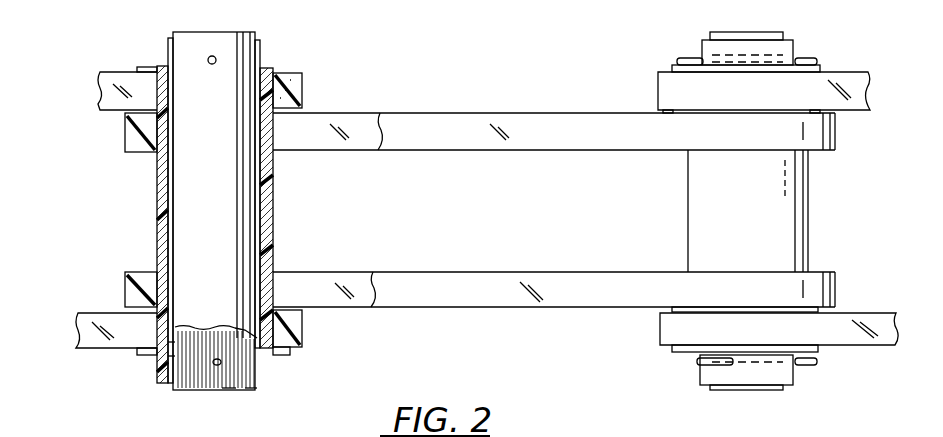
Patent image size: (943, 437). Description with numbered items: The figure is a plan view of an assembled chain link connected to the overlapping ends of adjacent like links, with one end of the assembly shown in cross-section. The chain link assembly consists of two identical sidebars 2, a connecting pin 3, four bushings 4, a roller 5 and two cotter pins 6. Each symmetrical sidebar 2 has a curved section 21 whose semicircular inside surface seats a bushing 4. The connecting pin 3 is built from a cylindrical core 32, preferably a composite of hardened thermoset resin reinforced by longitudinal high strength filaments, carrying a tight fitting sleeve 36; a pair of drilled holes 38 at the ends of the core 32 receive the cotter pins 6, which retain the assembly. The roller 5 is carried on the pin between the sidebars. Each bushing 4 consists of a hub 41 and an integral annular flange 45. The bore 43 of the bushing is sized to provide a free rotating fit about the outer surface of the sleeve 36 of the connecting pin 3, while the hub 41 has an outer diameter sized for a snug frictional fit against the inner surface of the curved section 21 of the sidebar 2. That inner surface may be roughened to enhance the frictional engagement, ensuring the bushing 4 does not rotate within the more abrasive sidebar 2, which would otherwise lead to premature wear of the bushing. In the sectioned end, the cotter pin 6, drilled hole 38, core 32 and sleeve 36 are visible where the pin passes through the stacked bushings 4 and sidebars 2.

The sidebar 2 is at (115, 72).
The connecting pin 3 is at (702, 45).
The bushing 4 is at (277, 67).
The roller 5 is at (262, 45).
The cotter pin 6 is at (208, 58).
The curved section 21 is at (125, 125).
The cylindrical core 32 is at (250, 392).
The sleeve 36 is at (275, 198).
The drilled hole 38 is at (228, 385).
The hub 41 is at (82, 330).
The bore 43 is at (175, 358).
The annular flange 45 is at (178, 345).